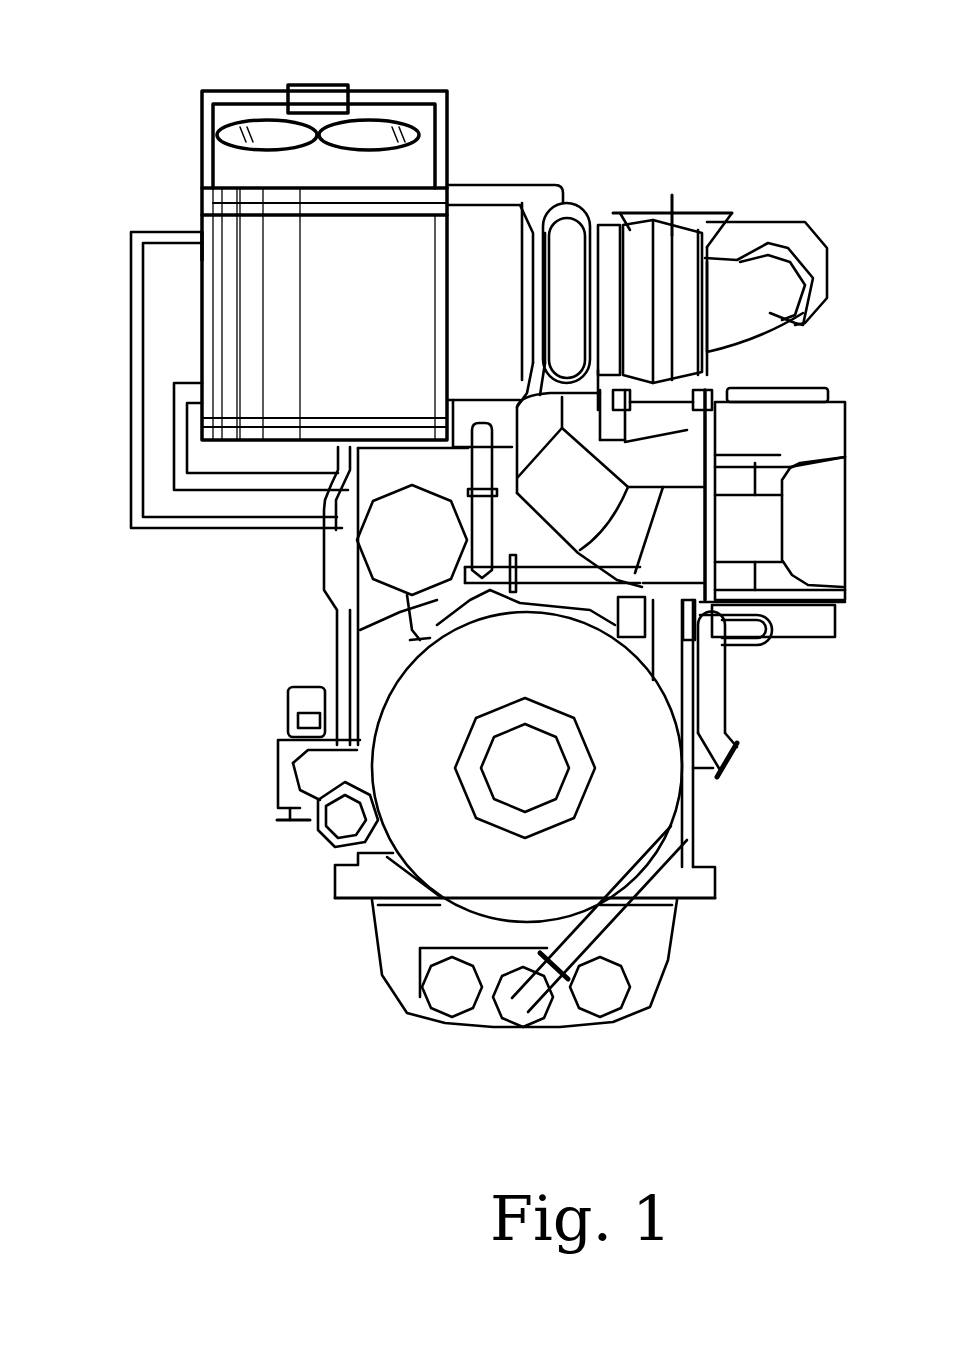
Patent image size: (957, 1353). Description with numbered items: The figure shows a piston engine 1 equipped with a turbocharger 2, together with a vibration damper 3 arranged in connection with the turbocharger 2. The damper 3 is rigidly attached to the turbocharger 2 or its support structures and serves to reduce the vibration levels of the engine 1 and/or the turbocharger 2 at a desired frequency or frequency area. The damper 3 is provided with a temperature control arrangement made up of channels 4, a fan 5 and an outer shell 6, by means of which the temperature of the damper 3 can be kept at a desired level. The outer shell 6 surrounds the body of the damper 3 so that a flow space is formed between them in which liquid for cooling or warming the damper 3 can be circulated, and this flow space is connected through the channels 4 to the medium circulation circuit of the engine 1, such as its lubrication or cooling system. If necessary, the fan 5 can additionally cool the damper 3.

The piston engine 1 is at (268, 651).
The turbocharger 2 is at (568, 268).
The vibration damper 3 is at (352, 237).
The channels 4 is at (135, 458).
The fan 5 is at (240, 115).
The outer shell 6 is at (208, 252).